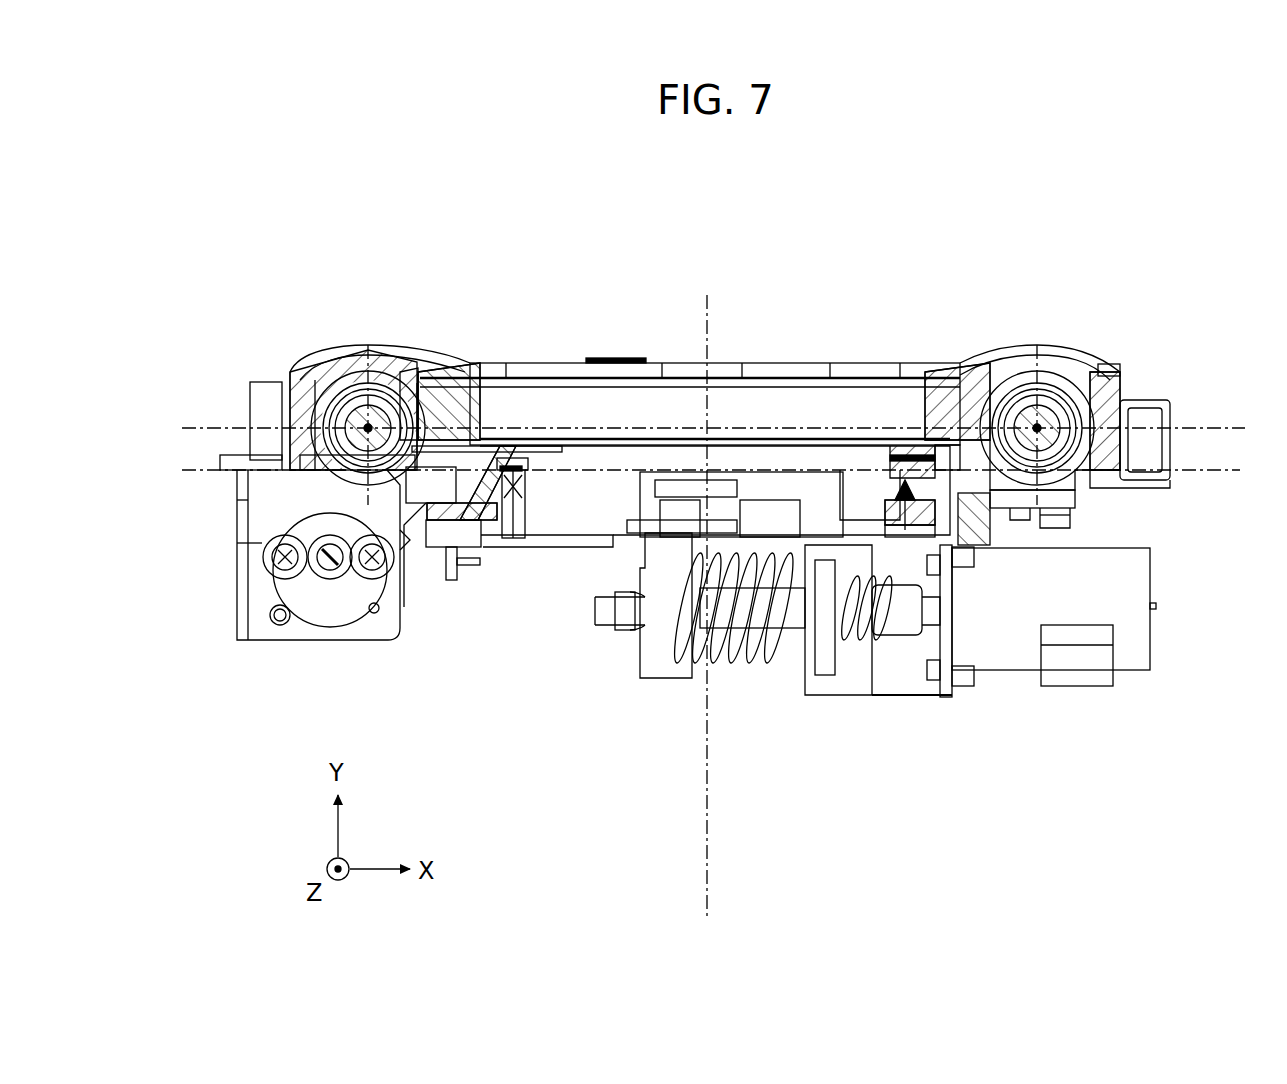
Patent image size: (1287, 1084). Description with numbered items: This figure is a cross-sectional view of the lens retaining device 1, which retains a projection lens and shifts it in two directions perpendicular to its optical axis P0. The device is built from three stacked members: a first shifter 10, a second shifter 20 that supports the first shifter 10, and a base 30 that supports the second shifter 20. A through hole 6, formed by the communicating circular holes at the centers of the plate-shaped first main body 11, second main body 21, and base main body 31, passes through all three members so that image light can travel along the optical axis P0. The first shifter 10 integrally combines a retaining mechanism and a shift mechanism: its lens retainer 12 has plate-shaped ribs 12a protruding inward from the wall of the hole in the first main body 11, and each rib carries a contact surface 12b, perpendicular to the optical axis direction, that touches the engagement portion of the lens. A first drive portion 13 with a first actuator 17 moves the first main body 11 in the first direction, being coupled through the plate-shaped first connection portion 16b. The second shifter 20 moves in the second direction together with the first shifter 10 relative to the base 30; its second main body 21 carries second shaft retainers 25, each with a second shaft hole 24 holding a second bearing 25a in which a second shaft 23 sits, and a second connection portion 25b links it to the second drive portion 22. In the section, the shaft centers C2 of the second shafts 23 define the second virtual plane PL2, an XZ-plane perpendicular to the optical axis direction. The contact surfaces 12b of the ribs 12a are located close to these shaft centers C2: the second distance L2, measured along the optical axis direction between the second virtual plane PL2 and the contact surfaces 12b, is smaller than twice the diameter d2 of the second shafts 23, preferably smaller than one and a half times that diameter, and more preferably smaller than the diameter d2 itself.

The lens retaining device 1 is at (1145, 222).
The through hole 6 is at (621, 410).
The first shifter 10 is at (757, 690).
The first main body 11 is at (592, 508).
The lens retainer 12 is at (478, 500).
The ribs 12a is at (505, 450).
The contact surfaces 12b is at (517, 540).
The first drive portion 13 is at (1000, 692).
The first connection portion 16b is at (660, 668).
The first actuator 17 is at (1132, 652).
The second shifter 20 is at (925, 368).
The second main body 21 is at (948, 368).
The second drive portion 22 is at (262, 648).
The second shafts 23 is at (375, 372).
The second shaft hole 24 is at (460, 365).
The second shaft retainers 25 is at (300, 372).
The second bearing 25a is at (412, 370).
The second connection portion 25b is at (332, 600).
The base 30 is at (1165, 372).
The base main body 31 is at (1095, 368).
The shaft centers C2 is at (344, 365).
The diameter of second shafts d2 is at (393, 440).
The second distance L2 is at (182, 375).
The optical axis P0 is at (700, 880).
The second virtual plane PL2 is at (1236, 427).